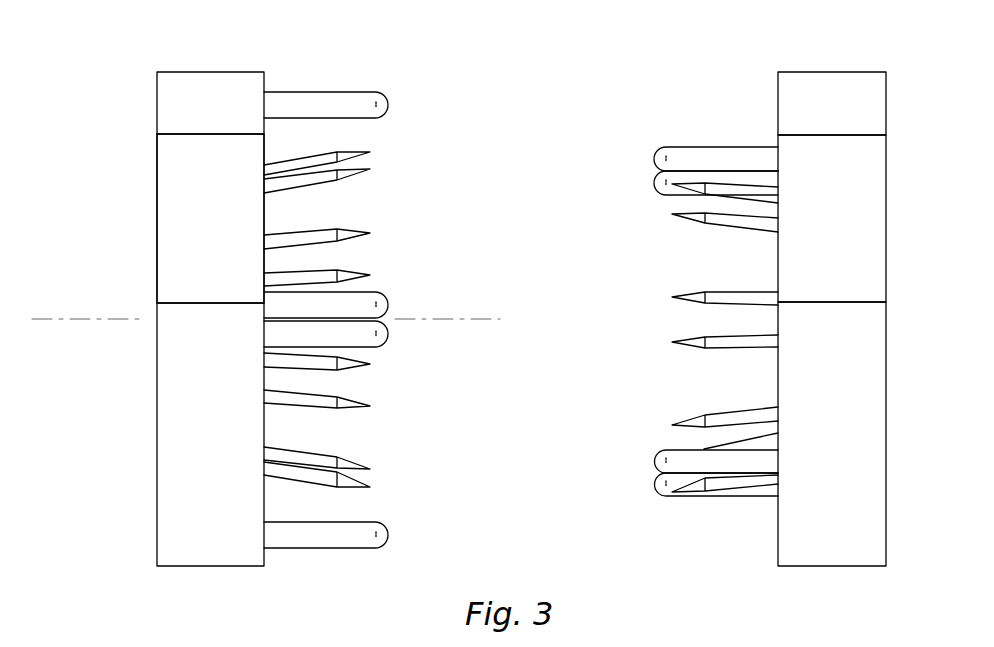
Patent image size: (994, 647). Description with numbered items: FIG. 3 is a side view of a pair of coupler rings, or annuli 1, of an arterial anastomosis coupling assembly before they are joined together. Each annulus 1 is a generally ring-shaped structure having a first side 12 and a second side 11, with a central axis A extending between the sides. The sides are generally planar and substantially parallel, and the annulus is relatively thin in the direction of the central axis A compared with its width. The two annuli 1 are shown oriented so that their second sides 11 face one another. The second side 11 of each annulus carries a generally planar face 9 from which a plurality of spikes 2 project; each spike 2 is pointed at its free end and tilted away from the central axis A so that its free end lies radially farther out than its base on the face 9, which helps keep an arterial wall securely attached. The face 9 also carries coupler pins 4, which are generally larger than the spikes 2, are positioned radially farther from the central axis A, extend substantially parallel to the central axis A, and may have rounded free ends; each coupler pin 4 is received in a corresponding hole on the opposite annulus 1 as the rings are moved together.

The annulus 1 is at (207, 72).
The second side 11 is at (265, 80).
The first side 12 is at (155, 168).
The spike 2 is at (690, 218).
The coupler pin 4 is at (389, 539).
The face 9 is at (777, 532).
The central axis A is at (90, 312).